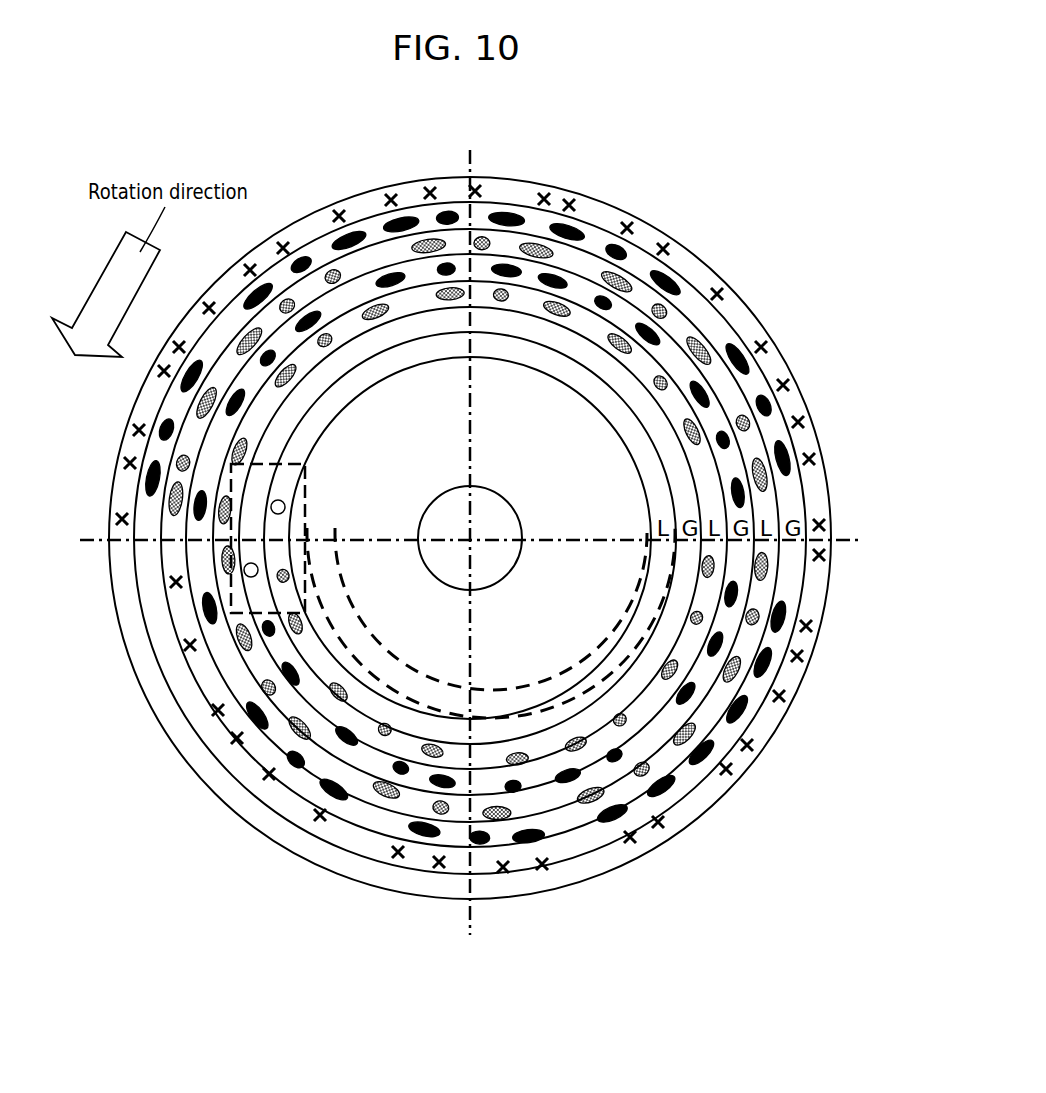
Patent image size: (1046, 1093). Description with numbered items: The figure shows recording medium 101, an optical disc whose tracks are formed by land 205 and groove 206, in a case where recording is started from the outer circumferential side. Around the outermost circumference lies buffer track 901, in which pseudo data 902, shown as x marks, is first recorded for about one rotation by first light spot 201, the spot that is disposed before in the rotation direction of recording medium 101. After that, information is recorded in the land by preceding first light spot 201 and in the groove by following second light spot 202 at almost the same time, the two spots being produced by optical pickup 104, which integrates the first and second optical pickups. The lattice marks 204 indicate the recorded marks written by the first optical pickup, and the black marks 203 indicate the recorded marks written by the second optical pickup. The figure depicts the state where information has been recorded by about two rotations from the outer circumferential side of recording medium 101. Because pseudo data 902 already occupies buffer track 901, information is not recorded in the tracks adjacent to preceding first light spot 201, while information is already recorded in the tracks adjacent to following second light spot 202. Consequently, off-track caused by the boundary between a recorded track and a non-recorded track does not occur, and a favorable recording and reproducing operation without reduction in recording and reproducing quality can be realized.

The recording medium 101 is at (555, 183).
The buffer track 901 is at (683, 255).
The pseudo data 902 is at (778, 377).
The land 205 is at (765, 513).
The first light spot 201 is at (287, 505).
The second light spot 202 is at (259, 570).
The optical pickup 104 is at (232, 602).
The groove 206 is at (788, 540).
The black marks 203 is at (630, 807).
The lattice marks 204 is at (490, 805).